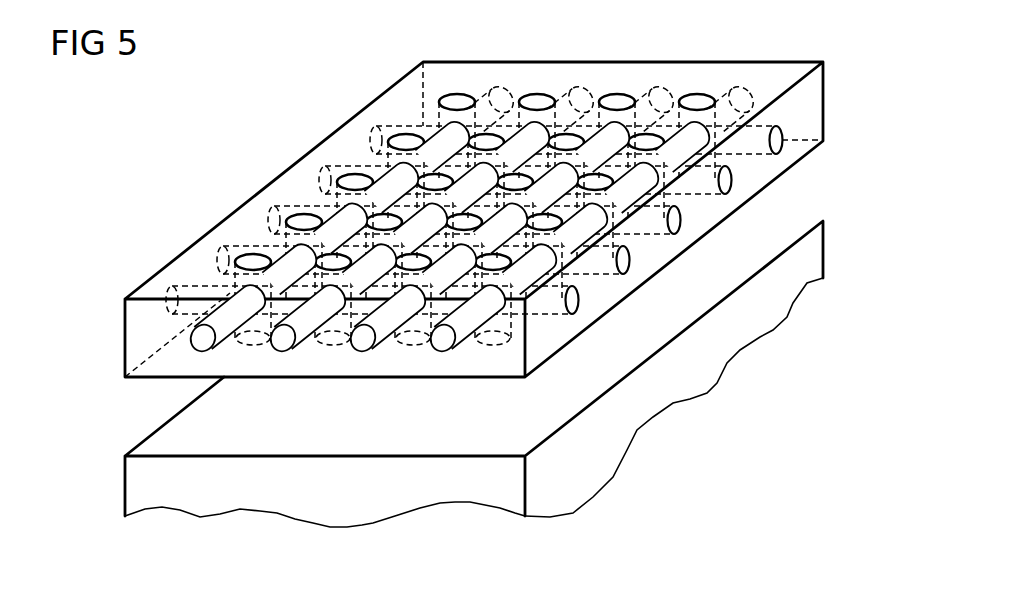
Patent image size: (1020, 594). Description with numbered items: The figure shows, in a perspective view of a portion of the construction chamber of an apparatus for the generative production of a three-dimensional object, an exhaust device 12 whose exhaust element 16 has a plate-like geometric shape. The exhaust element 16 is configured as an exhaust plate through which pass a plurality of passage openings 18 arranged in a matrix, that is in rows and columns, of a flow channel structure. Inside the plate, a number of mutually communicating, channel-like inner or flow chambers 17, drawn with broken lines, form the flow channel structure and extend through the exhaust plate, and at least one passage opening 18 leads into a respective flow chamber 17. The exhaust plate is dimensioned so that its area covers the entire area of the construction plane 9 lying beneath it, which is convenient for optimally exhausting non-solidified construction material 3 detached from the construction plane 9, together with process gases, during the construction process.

The construction material 3 is at (208, 426).
The construction plane 9 is at (538, 411).
The exhaust device 12 is at (474, 218).
The exhaust element 16 is at (474, 219).
The flow chambers 17 is at (237, 252).
The passage openings 18 is at (302, 217).